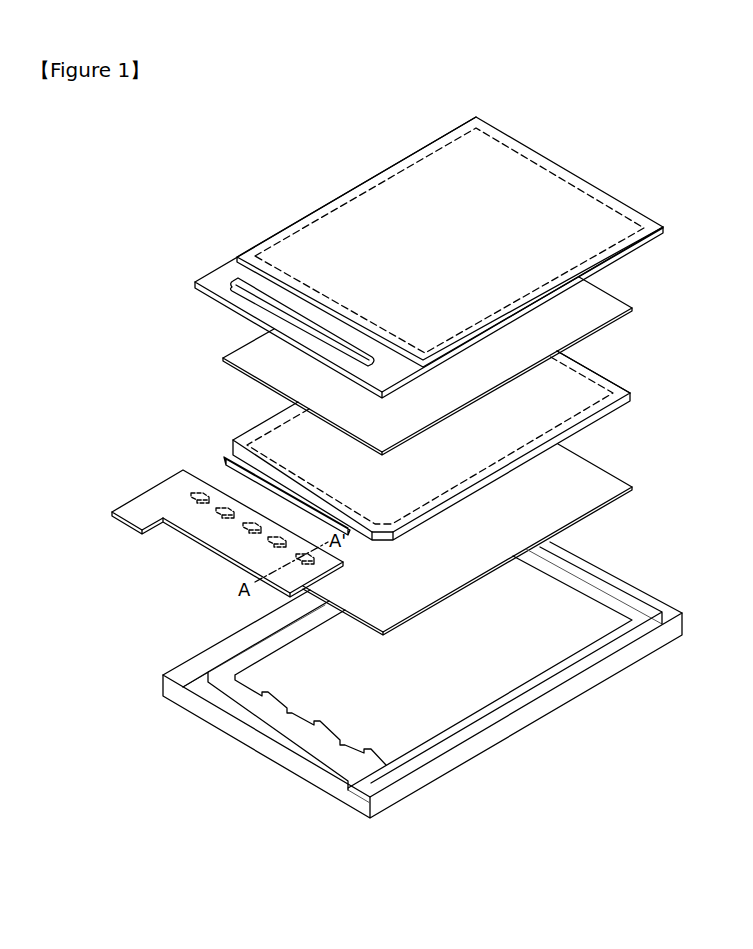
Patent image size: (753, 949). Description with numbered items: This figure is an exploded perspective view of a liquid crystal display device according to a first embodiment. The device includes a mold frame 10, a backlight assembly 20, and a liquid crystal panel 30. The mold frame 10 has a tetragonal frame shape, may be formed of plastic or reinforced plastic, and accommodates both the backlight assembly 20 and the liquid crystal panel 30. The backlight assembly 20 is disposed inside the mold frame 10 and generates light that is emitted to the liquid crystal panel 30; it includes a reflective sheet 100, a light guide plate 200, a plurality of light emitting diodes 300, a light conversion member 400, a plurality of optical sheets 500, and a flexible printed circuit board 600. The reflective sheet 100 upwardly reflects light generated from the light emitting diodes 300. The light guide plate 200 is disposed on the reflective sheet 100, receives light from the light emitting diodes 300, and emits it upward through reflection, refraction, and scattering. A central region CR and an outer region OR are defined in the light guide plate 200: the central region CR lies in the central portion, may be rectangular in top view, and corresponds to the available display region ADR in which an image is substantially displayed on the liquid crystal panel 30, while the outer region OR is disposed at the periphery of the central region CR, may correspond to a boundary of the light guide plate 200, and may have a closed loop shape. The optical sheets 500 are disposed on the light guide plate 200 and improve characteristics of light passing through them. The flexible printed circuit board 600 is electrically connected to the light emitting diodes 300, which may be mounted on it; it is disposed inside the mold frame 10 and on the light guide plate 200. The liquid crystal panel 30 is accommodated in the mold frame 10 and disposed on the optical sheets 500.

The mold frame 10 is at (176, 660).
The backlight assembly 20 is at (56, 406).
The liquid crystal panel 30 is at (268, 241).
The reflective sheet 100 is at (368, 607).
The light guide plate 200 is at (174, 483).
The light emitting diodes 300 is at (197, 503).
The light conversion member 400 is at (223, 461).
The optical sheets 500 is at (284, 378).
The flexible printed circuit board 600 is at (268, 468).
The available display region ADR is at (547, 170).
The central region CR is at (574, 380).
The outer region OR is at (629, 390).